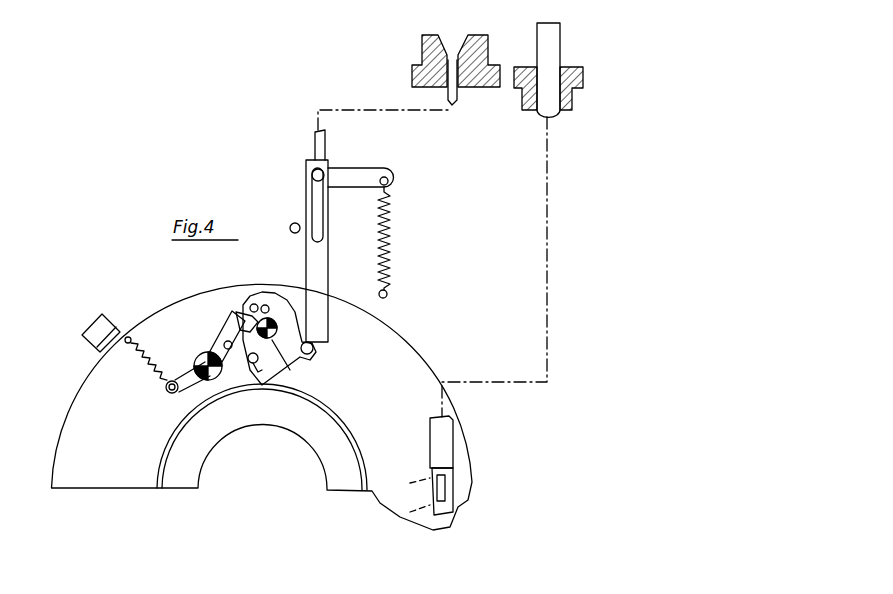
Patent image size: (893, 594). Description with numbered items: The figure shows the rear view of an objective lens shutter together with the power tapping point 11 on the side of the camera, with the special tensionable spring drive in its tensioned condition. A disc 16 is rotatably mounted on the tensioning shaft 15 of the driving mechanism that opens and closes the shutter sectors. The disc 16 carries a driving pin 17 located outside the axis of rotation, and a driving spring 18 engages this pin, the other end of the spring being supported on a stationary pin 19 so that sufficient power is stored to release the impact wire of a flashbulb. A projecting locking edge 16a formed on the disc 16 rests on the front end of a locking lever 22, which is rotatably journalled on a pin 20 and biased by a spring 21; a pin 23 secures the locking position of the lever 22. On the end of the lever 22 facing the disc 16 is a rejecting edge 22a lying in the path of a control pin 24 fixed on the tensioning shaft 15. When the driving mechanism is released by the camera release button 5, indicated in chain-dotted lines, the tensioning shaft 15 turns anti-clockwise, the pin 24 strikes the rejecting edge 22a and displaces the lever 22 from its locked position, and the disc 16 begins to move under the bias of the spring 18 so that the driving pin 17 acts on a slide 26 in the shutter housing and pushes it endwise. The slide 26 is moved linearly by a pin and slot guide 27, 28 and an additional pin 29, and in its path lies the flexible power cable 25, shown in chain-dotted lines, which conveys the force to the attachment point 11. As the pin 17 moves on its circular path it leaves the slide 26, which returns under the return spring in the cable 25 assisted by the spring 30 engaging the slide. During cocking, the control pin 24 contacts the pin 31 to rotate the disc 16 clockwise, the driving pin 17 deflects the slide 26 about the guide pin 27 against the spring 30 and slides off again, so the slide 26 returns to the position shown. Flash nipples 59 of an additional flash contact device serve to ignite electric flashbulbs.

The camera release button 5 is at (553, 52).
The power tapping point 11 is at (421, 47).
The tensioning shaft 15 is at (265, 340).
The disc 16 is at (290, 370).
The projecting locking edge 16a is at (256, 371).
The driving pin 17 is at (318, 348).
The driving spring 18 is at (297, 318).
The stationary pin 19 is at (252, 364).
The pin 20 is at (196, 362).
The spring 21 is at (145, 367).
The locking lever 22 is at (222, 338).
The rejecting edge 22a is at (242, 322).
The pin 23 is at (238, 316).
The control pin 24 is at (250, 306).
The flexible power cable 25 is at (350, 107).
The slide 26 is at (306, 255).
The guide pin 27 is at (312, 172).
The slot 28 is at (312, 193).
The additional pin 29 is at (290, 226).
The spring 30 is at (398, 243).
The pin 31 is at (262, 306).
The flash nipples 59 is at (97, 335).